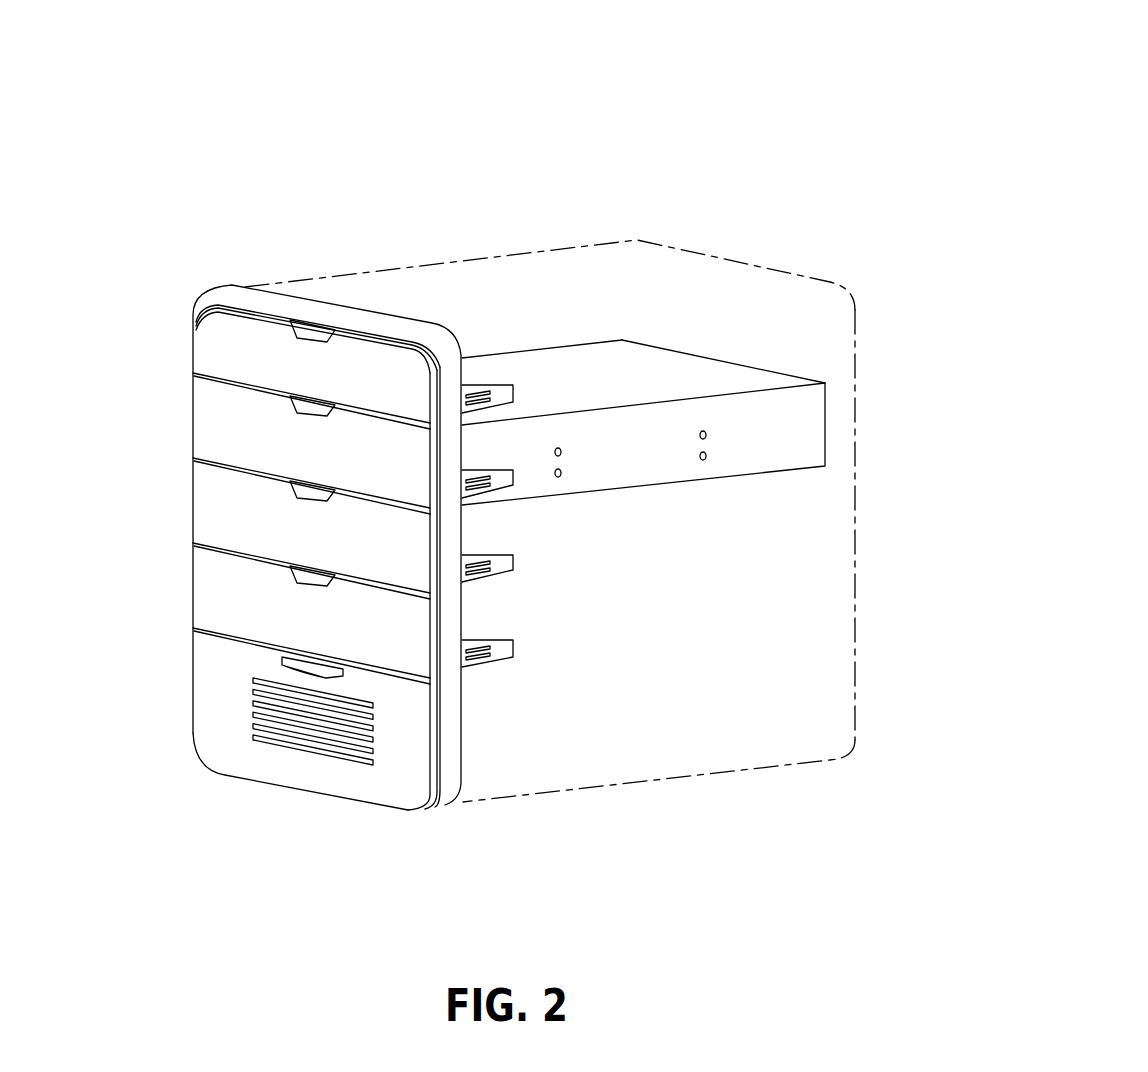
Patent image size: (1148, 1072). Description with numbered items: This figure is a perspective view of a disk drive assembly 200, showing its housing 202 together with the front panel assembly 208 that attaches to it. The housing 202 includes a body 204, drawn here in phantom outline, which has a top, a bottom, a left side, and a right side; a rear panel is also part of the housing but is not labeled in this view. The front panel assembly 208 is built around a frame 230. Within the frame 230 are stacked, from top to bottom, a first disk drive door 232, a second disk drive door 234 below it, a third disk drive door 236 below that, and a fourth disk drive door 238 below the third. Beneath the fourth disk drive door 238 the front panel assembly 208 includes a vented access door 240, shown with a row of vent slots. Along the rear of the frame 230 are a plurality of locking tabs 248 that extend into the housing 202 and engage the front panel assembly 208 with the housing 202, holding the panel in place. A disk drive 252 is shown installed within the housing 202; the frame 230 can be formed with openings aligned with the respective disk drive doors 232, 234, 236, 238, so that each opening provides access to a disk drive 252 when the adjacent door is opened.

The disk drive assembly 200 is at (699, 149).
The housing 202 is at (637, 240).
The body 204 is at (807, 622).
The front panel assembly 208 is at (220, 290).
The frame 230 is at (450, 770).
The first disk drive door 232 is at (218, 323).
The second disk drive door 234 is at (218, 418).
The third disk drive door 236 is at (218, 500).
The fourth disk drive door 238 is at (218, 582).
The vented access door 240 is at (218, 675).
The locking tabs 248 is at (503, 567).
The disk drive 252 is at (762, 458).